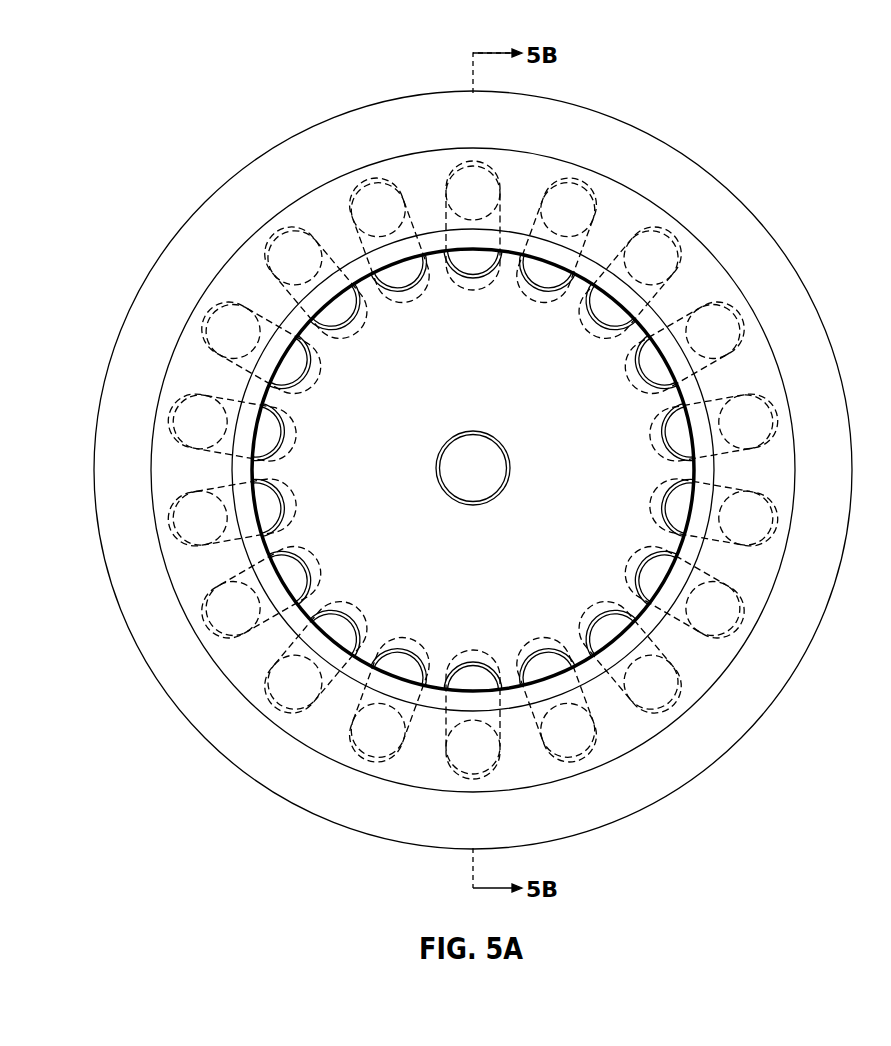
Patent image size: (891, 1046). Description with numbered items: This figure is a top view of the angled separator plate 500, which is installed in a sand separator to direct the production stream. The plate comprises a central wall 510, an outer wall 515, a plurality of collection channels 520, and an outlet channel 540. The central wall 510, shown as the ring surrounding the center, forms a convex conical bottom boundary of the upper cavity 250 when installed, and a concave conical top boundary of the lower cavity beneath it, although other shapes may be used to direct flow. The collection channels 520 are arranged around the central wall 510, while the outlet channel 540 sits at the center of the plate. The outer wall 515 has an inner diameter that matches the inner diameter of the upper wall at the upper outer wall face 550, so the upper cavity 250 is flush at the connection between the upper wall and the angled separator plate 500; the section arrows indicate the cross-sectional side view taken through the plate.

The angled separator plate 500 is at (450, 488).
The outer wall 515 is at (598, 826).
The upper cavity 250 is at (188, 378).
The central wall 510 is at (330, 612).
The upper outer wall face 550 is at (630, 262).
The collection channels 520 is at (340, 311).
The outlet channel 540 is at (475, 470).